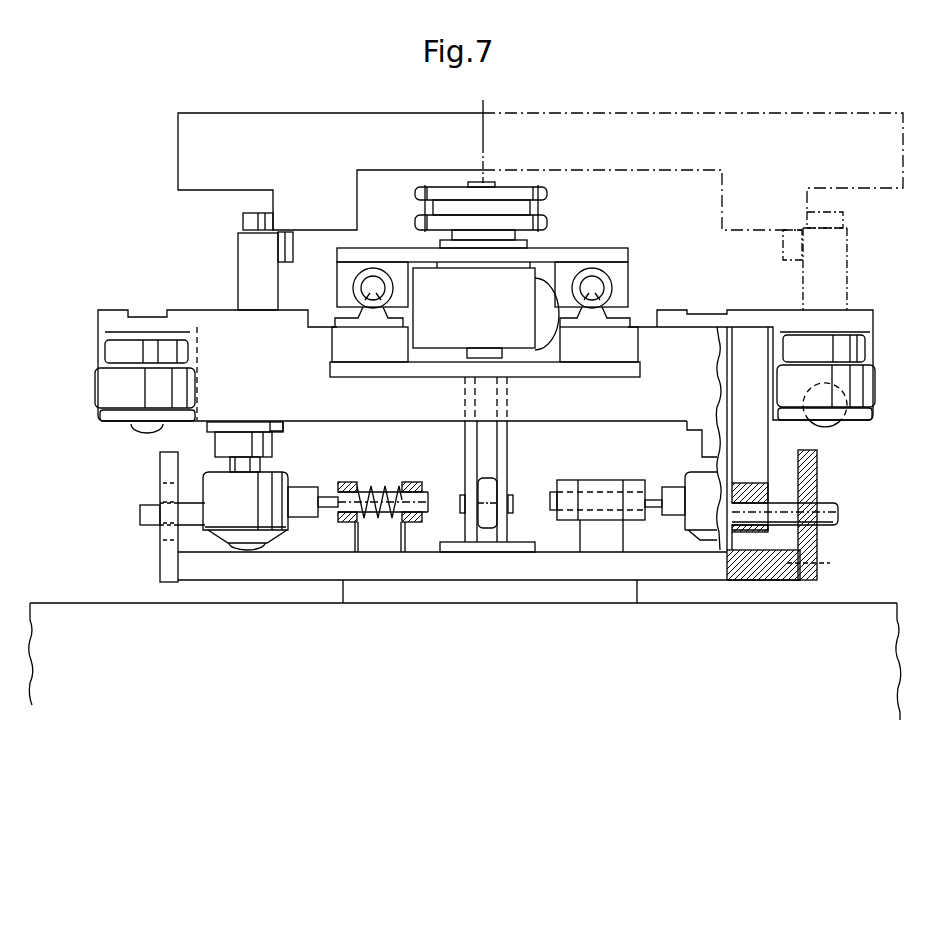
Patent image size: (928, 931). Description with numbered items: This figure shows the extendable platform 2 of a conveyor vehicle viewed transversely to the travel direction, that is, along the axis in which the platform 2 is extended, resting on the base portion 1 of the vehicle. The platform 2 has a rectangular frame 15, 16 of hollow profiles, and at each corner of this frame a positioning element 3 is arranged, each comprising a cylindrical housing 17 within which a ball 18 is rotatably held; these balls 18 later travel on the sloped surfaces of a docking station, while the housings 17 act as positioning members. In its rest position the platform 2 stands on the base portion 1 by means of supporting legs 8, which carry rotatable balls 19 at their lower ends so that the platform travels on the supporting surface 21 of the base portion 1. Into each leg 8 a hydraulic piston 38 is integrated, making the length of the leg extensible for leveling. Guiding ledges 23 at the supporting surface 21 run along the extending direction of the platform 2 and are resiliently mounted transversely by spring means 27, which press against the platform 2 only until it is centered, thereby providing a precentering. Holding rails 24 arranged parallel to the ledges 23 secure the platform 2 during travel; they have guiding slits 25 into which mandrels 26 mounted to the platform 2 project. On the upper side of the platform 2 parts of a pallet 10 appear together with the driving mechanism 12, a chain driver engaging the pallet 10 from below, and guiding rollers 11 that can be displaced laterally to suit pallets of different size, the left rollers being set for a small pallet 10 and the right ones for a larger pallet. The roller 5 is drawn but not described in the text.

The base portion 1 is at (483, 709).
The platform 2 is at (92, 307).
The positioning element 3 is at (483, 389).
The guide roller 5 is at (515, 480).
The supporting leg 8 is at (280, 427).
The pallet 10 is at (173, 108).
The guiding roller 11 is at (228, 227).
The driving mechanism 12 is at (552, 202).
The frame 15 is at (102, 340).
The frame 16 is at (598, 400).
The cylindrical housing 17 is at (115, 383).
The ball 18 is at (133, 427).
The rotatable ball 19 is at (248, 547).
The supporting surface 21 is at (495, 565).
The guiding ledge 23 is at (302, 505).
The holding rail 24 is at (165, 468).
The guiding slit 25 is at (817, 530).
The mandrel 26 is at (145, 512).
The spring means 27 is at (378, 508).
The hydraulic piston 38 is at (272, 447).